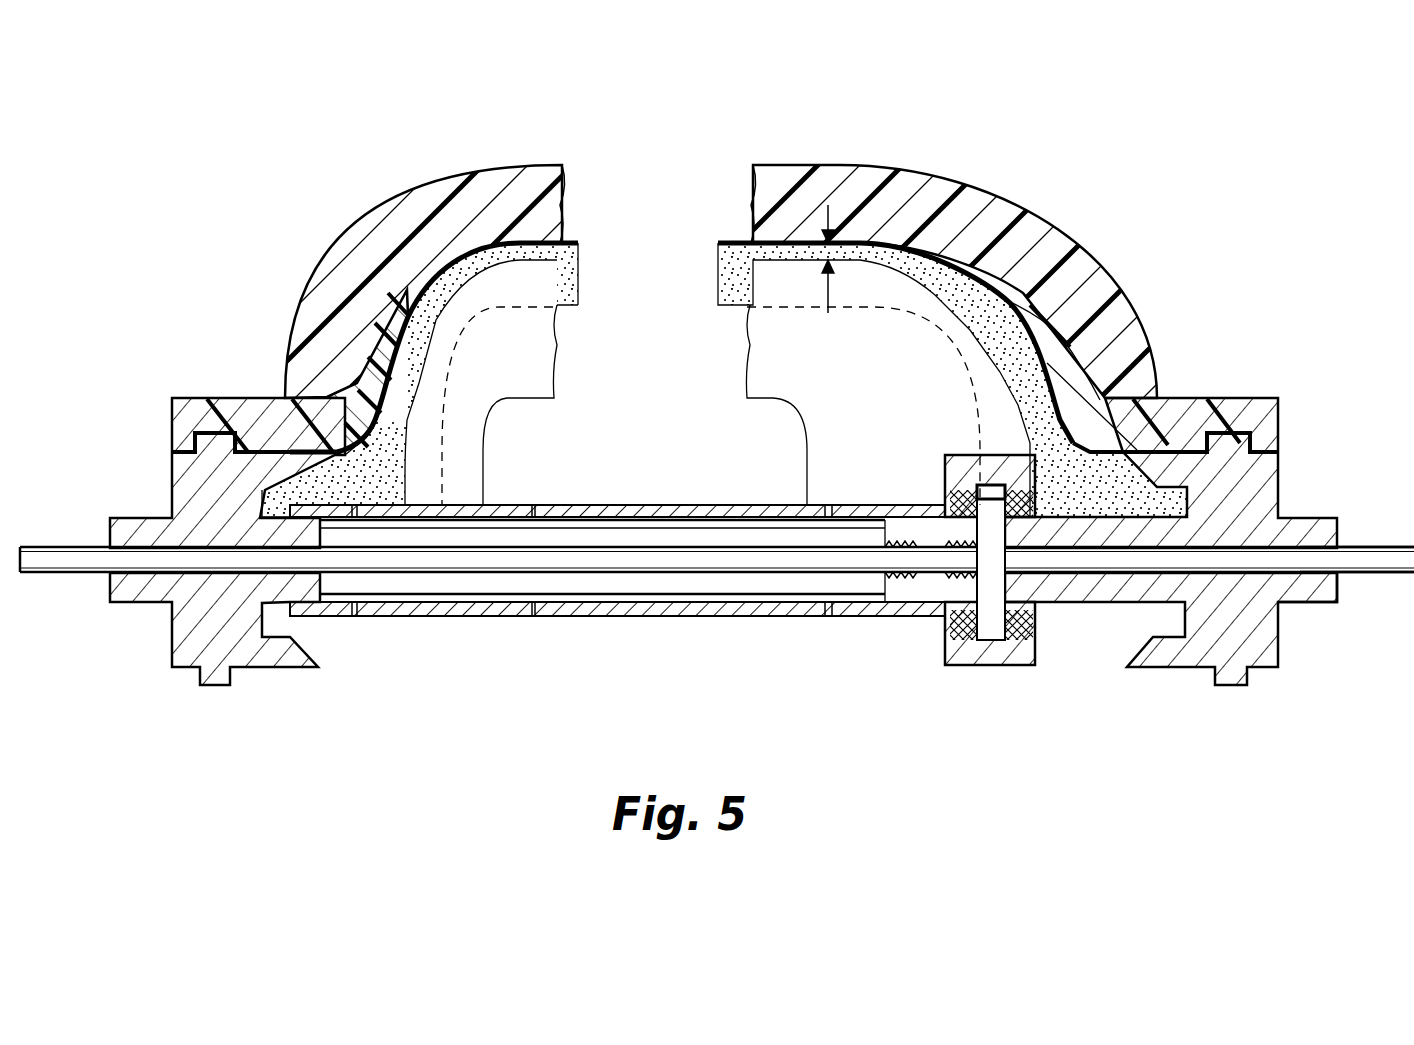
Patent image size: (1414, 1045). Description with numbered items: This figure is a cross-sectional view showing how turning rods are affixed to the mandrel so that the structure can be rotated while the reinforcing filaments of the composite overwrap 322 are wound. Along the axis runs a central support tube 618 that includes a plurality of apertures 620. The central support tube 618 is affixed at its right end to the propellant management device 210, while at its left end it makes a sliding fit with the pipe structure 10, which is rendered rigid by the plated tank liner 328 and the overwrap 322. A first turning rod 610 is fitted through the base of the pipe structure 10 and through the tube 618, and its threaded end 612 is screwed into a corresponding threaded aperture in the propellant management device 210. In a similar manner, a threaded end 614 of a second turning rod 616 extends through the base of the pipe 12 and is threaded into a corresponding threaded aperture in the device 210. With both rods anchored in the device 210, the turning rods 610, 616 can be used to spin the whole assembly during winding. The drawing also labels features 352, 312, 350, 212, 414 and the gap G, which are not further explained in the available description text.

The pipe structure 10 is at (140, 519).
The pipe 12 is at (1315, 519).
The first turning rod 610 is at (78, 549).
The second turning rod 616 is at (1385, 549).
The threaded end 612 is at (908, 576).
The threaded end 614 is at (947, 540).
The central support tube 618 is at (635, 505).
The apertures 620 is at (228, 397).
The propellant management device 210 is at (1001, 665).
The bolt 352 is at (1043, 620).
The flange 312 is at (1325, 603).
The mounting tab 350 is at (213, 685).
The inner wall 212 is at (490, 447).
The composite overwrap 322 is at (305, 280).
The plated tank liner 328 is at (568, 243).
The seal material 414 is at (718, 278).
The gap G is at (828, 279).